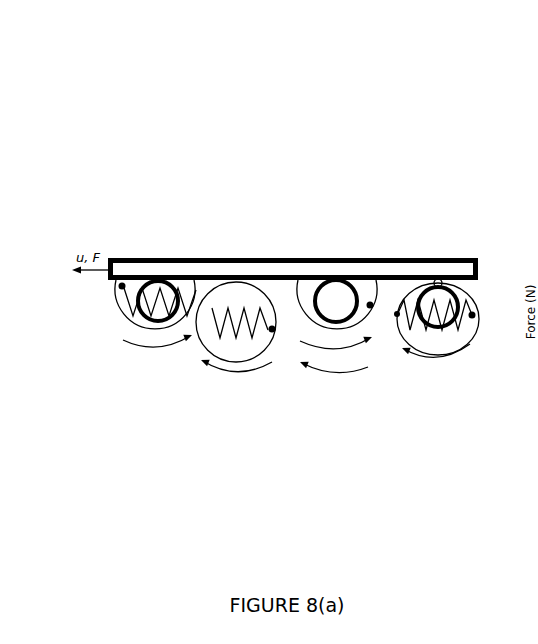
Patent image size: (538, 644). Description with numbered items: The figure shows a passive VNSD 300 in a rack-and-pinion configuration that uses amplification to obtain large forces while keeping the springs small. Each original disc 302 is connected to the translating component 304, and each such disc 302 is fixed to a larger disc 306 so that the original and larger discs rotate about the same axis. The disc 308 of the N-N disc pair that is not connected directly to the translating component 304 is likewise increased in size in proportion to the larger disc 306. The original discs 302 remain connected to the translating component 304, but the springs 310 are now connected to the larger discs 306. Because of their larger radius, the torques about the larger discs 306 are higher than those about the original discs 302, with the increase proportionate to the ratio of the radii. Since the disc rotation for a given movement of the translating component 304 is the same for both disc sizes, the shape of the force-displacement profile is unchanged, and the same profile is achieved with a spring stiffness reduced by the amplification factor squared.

The VNSD 300 is at (289, 261).
The disc 302 is at (330, 249).
The translating component 304 is at (275, 258).
The larger disc 306 is at (120, 316).
The disc 308 is at (205, 343).
The spring 310 is at (297, 267).